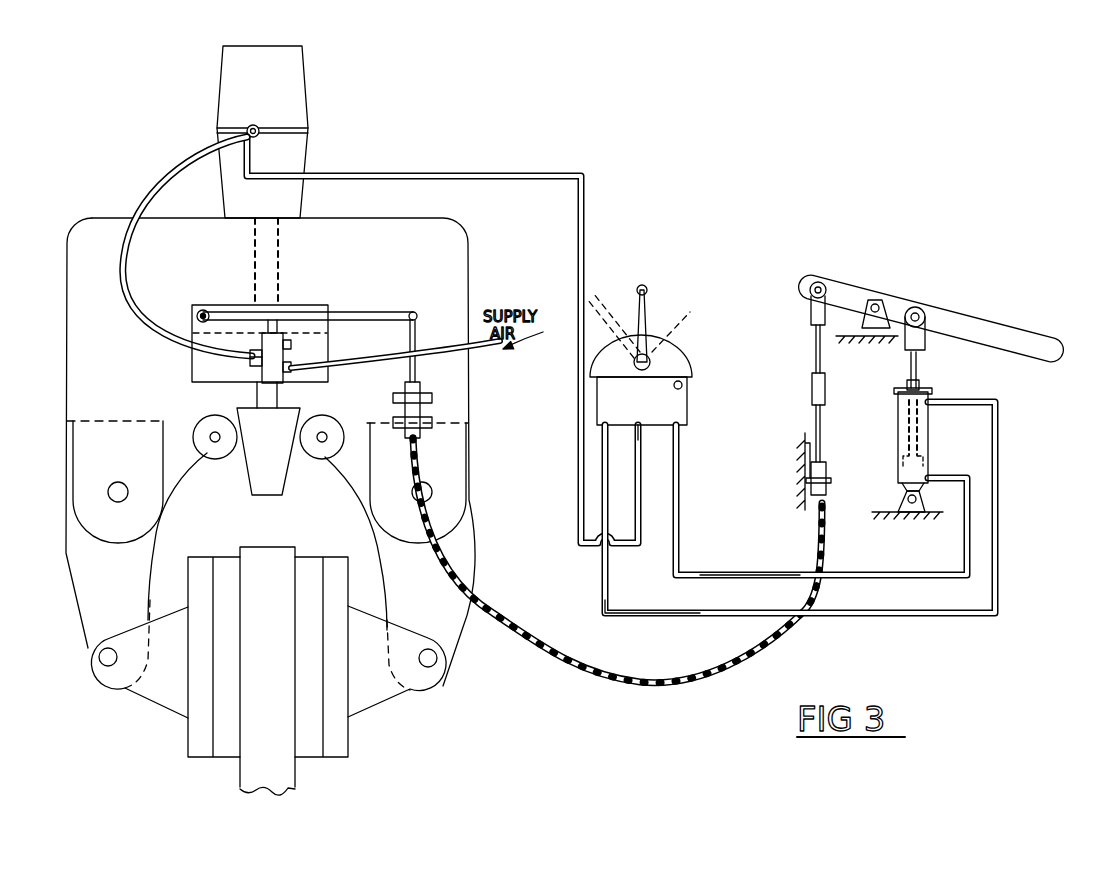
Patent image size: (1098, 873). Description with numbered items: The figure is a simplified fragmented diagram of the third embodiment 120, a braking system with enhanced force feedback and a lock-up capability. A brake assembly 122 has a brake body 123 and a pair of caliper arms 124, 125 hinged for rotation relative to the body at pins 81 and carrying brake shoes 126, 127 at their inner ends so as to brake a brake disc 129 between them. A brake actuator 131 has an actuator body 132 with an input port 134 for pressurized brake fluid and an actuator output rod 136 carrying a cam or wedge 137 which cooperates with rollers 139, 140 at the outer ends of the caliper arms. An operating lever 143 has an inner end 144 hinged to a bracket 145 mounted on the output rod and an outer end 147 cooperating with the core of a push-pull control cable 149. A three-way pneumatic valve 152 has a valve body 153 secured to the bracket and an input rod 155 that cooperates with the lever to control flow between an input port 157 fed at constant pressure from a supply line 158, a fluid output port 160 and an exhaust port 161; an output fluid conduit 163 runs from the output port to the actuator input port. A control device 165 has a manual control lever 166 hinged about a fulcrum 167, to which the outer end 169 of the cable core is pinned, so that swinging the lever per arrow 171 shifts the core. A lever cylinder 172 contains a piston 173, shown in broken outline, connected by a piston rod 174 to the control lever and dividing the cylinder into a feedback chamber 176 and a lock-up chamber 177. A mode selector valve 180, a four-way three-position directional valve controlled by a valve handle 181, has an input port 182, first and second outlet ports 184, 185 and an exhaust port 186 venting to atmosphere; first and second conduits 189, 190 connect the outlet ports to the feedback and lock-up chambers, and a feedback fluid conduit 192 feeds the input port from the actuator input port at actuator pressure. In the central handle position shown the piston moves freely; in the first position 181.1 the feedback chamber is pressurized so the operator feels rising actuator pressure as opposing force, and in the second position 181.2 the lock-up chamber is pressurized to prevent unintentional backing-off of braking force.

The pins 81 is at (113, 486).
The third embodiment 120 is at (598, 122).
The brake assembly 122 is at (398, 148).
The brake body 123 is at (433, 228).
The caliper arm 124 is at (145, 553).
The caliper arm 125 is at (452, 636).
The brake shoe 126 is at (202, 758).
The brake shoe 127 is at (340, 742).
The brake disc 129 is at (283, 775).
The brake actuator 131 is at (194, 101).
The actuator body 132 is at (280, 73).
The input port 134 is at (260, 129).
The actuator output rod 136 is at (275, 248).
The cam or wedge 137 is at (260, 418).
The roller 139 is at (235, 442).
The roller 140 is at (300, 442).
The operating lever 143 is at (340, 312).
The inner end 144 is at (207, 311).
The bracket 145 is at (195, 371).
The outer end 147 is at (418, 316).
The push-pull control cable 149 is at (518, 582).
The three-way pneumatic valve 152 is at (171, 351).
The valve body 153 is at (243, 364).
The input rod 155 is at (280, 325).
The input port 157 is at (291, 371).
The supply line 158 is at (478, 352).
The fluid output port 160 is at (257, 368).
The exhaust port 161 is at (292, 344).
The output fluid conduit 163 is at (138, 275).
The control device 165 is at (920, 270).
The manual control lever 166 is at (892, 307).
The fulcrum 167 is at (866, 305).
The outer end 169 is at (810, 298).
The arrow 171 is at (1083, 360).
The lever cylinder 172 is at (887, 437).
The piston 173 is at (895, 455).
The piston rod 174 is at (918, 364).
The feedback chamber 176 is at (895, 485).
The lock-up chamber 177 is at (905, 410).
The mode selector valve 180 is at (695, 278).
The valve handle 181 is at (648, 288).
The first position 181.1 is at (692, 317).
The second position 181.2 is at (590, 290).
The input port 182 is at (640, 425).
The first outlet port 184 is at (685, 428).
The second outlet port 185 is at (600, 428).
The exhaust port 186 is at (684, 384).
The first conduit 189 is at (805, 572).
The second conduit 190 is at (608, 620).
The feedback fluid conduit 192 is at (465, 173).